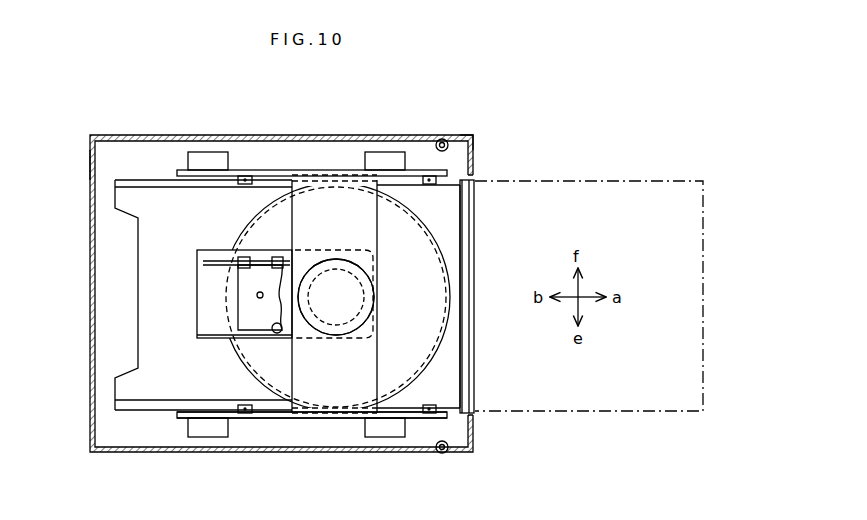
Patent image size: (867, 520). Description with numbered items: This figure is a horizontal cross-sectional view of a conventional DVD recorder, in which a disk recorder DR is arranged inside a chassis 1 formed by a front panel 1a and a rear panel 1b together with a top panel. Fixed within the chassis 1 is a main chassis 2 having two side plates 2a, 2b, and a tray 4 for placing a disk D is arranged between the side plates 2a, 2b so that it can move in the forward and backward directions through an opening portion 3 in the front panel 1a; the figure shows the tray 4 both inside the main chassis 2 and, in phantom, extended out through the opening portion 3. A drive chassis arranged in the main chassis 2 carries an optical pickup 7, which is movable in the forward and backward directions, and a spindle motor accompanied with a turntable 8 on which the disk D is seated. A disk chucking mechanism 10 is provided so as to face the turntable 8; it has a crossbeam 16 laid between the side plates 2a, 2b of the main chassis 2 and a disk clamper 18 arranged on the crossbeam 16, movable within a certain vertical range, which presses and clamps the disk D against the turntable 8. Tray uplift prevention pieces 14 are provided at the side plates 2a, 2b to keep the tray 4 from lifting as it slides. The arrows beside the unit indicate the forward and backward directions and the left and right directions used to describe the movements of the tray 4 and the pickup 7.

The chassis 1 is at (125, 135).
The front panel 1a is at (472, 143).
The rear panel 1b is at (90, 165).
The main chassis 2 is at (178, 414).
The side plate 2a is at (278, 170).
The side plate 2b is at (275, 418).
The opening portion 3 is at (476, 178).
The tray 4 is at (475, 365).
The optical pickup 7 is at (240, 325).
The turntable 8 is at (336, 297).
The disk chucking mechanism 10 is at (383, 278).
The tray uplift prevention pieces 14 is at (244, 185).
The crossbeam 16 is at (292, 238).
The disk clamper 18 is at (336, 297).
The disk D is at (225, 247).
The disk recorder DR is at (130, 291).